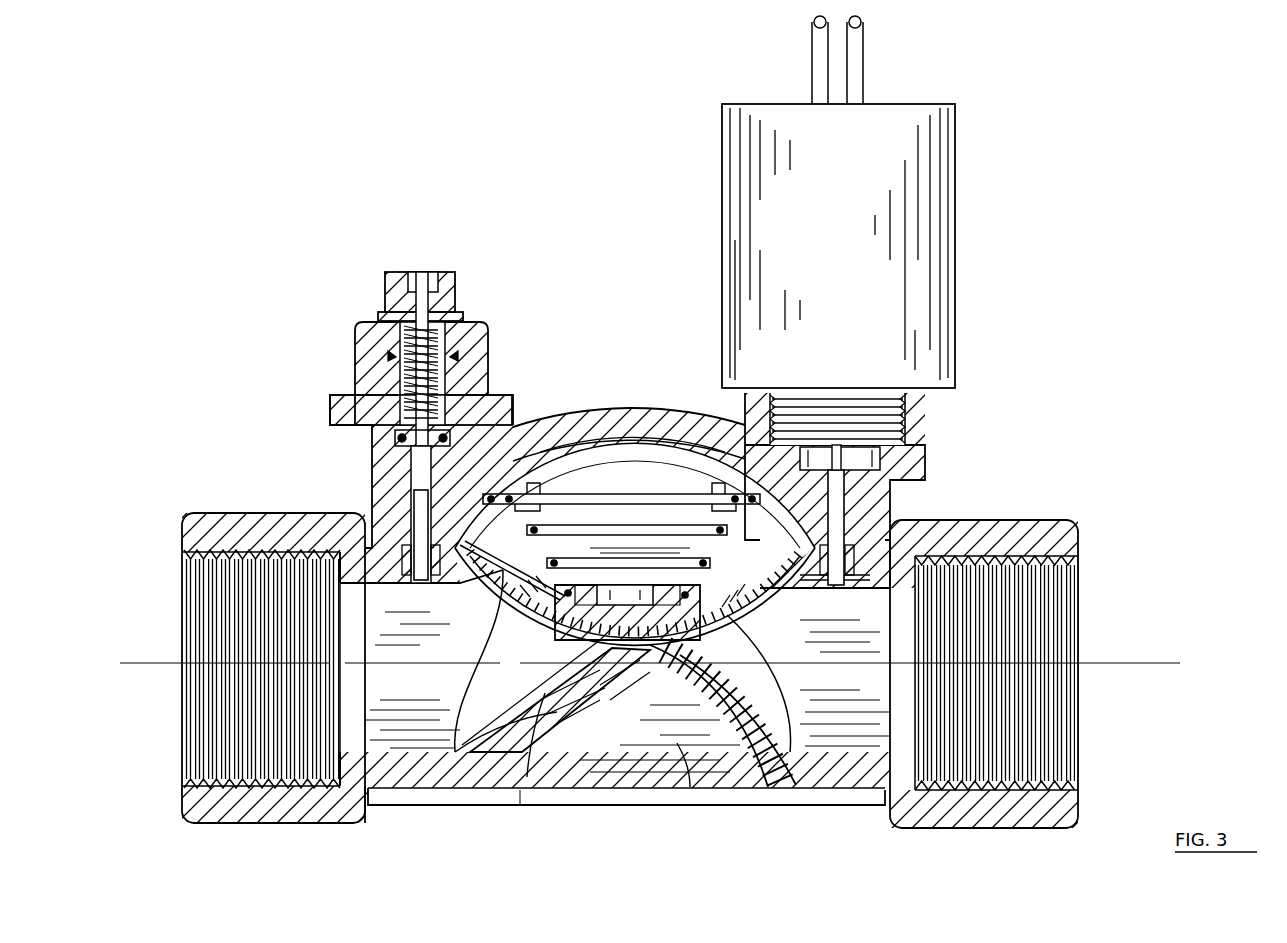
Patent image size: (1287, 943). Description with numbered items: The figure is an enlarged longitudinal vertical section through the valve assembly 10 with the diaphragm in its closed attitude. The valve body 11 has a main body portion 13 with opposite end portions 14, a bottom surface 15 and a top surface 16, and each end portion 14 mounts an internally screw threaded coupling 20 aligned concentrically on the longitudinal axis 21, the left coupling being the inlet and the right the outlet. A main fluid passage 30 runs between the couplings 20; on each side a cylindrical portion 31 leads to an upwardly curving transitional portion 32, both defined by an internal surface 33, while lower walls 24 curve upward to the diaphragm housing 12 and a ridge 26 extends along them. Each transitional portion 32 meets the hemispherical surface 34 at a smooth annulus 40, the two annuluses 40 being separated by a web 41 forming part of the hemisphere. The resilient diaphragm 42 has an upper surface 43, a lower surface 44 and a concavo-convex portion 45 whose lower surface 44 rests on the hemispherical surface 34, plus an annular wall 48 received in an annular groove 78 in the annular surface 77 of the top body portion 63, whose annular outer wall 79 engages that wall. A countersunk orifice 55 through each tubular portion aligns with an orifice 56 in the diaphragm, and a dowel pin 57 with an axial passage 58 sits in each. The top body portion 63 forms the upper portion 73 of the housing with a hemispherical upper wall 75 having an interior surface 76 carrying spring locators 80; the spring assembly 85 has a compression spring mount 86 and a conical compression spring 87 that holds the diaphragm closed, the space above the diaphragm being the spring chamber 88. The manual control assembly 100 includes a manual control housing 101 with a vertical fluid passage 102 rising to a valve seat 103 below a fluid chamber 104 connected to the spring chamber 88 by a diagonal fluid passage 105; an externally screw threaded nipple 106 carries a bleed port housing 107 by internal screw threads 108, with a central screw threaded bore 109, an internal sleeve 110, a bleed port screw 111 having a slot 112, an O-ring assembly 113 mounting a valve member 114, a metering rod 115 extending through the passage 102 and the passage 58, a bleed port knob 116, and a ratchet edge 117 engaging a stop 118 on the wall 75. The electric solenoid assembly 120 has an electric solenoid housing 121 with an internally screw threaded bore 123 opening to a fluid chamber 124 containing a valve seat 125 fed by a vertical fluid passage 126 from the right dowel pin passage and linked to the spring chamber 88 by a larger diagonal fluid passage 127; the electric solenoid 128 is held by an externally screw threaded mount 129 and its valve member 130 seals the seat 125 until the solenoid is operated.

The valve assembly 10 is at (948, 445).
The valve body 11 is at (232, 824).
The diaphragm housing 12 is at (560, 430).
The main body portion 13 is at (765, 795).
The end portion 14 is at (183, 705).
The bottom surface 15 is at (530, 795).
The top surface 16 is at (830, 530).
The internally screw threaded coupling 20 is at (270, 512).
The longitudinal axis 21 is at (178, 660).
The lower wall 24 is at (580, 745).
The ridge 26 is at (640, 810).
The main fluid passage 30 is at (455, 730).
The cylindrical portion 31 is at (435, 760).
The transitional portion 32 is at (548, 760).
The internal surface 33 is at (463, 641).
The hemispherical surface 34 is at (522, 592).
The annulus 40 is at (548, 622).
The web 41 is at (648, 660).
The diaphragm 42 is at (826, 590).
The upper surface 43 is at (738, 590).
The lower surface 44 is at (745, 615).
The concavo-convex portion 45 is at (496, 645).
The annular wall 48 is at (412, 520).
The countersunk orifice 55 is at (470, 558).
The orifice 56 is at (410, 578).
The dowel pin 57 is at (432, 575).
The axial passage 58 is at (418, 585).
The top body portion 63 is at (958, 430).
The upper portion 73 is at (650, 415).
The hemispherical upper wall 75 is at (520, 455).
The interior surface 76 is at (655, 495).
The annular surface 77 is at (400, 578).
The annular groove 78 is at (395, 545).
The annular outer wall 79 is at (890, 545).
The spring locator 80 is at (545, 482).
The spring assembly 85 is at (658, 460).
The compression spring mount 86 is at (585, 636).
The compression spring 87 is at (700, 568).
The spring chamber 88 is at (575, 445).
The manual control assembly 100 is at (437, 265).
The manual control housing 101 is at (395, 455).
The vertical fluid passage 102 is at (375, 475).
The valve seat 103 is at (395, 437).
The fluid chamber 104 is at (456, 356).
The diagonal fluid passage 105 is at (500, 494).
The externally screw threaded nipple 106 is at (392, 356).
The bleed port housing 107 is at (488, 340).
The internal screw threads 108 is at (462, 318).
The central screw threaded bore 109 is at (448, 310).
The internal sleeve 110 is at (385, 312).
The bleed port screw 111 is at (405, 370).
The slot 112 is at (418, 295).
The O-ring assembly 113 is at (385, 400).
The valve member 114 is at (528, 530).
The metering rod 115 is at (405, 488).
The bleed port knob 116 is at (393, 272).
The ratchet edge 117 is at (505, 398).
The stop 118 is at (515, 425).
The electric solenoid assembly 120 is at (965, 217).
The electric solenoid housing 121 is at (925, 425).
The internally screw threaded bore 123 is at (900, 395).
The fluid chamber 124 is at (858, 468).
The valve seat 125 is at (800, 440).
The vertical fluid passage 126 is at (712, 548).
The diagonal fluid passage 127 is at (762, 504).
The electric solenoid 128 is at (848, 245).
The externally screw threaded mount 129 is at (870, 405).
The valve member 130 is at (882, 462).